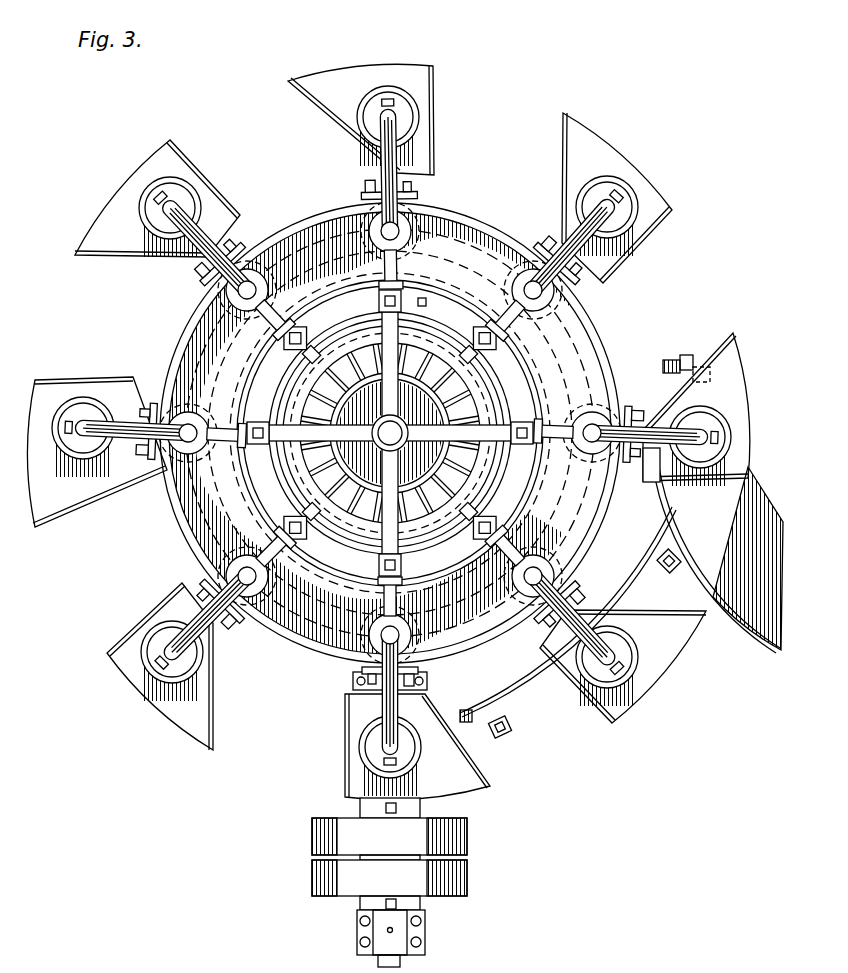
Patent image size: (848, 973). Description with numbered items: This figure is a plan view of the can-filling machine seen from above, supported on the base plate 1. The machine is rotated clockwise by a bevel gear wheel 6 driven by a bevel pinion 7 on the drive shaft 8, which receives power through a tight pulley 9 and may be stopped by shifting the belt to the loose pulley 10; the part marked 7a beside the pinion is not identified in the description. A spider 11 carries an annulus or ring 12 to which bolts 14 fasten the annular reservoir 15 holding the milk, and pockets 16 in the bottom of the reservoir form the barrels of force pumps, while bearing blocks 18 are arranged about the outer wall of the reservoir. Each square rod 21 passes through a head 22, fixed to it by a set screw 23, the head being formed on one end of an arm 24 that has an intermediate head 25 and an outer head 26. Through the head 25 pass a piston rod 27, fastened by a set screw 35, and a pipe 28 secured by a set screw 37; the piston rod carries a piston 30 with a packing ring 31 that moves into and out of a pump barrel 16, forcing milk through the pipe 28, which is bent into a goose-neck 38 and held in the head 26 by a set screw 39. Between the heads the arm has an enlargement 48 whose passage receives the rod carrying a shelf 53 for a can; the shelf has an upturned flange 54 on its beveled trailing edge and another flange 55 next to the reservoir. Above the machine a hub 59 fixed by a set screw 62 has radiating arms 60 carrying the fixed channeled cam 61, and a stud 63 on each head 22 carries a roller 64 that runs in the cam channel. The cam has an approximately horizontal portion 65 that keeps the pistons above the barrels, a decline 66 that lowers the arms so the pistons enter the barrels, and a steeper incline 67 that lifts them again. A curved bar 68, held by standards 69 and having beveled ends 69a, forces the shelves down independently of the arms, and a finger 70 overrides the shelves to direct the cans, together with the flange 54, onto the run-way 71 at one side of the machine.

The base plate 1 is at (398, 433).
The bevel gear wheel 6 is at (580, 498).
The bevel pinion 7 is at (330, 620).
The frame lug 7a is at (418, 317).
The shaft 8 is at (370, 965).
The pulley 9 is at (468, 838).
The loose pulley 10 is at (468, 877).
The spider 11 is at (390, 433).
The annulus or ring 12 is at (522, 350).
The bolts 14 is at (428, 302).
The annular reservoir 15 is at (473, 227).
The pockets 16 is at (510, 273).
The bearing blocks 18 is at (157, 405).
The rod 21 is at (523, 433).
The head 22 is at (557, 523).
The set screw 23 is at (377, 293).
The arm 24 is at (552, 306).
The head or enlargement 25 is at (560, 303).
The head 26 is at (617, 223).
The piston rod 27 is at (593, 423).
The pipe or conduit 28 is at (530, 613).
The piston 30 is at (243, 560).
The packing ring 31 is at (263, 593).
The set screw 35 is at (190, 453).
The set screw 37 is at (173, 450).
The goose-neck 38 is at (210, 638).
The set screw 39 is at (162, 670).
The enlargement 48 is at (540, 642).
The shelf 53 is at (195, 730).
The upturned flange 54 is at (215, 708).
The flange 55 is at (182, 595).
The hub 59 is at (390, 433).
The arms 60 is at (388, 433).
The channeled cam 61 is at (280, 463).
The set screw 62 is at (408, 426).
The stud 63 is at (370, 559).
The roller 64 is at (477, 529).
The horizontal portion 65 is at (504, 523).
The decline 66 is at (287, 413).
The incline 67 is at (530, 356).
The bar 68 is at (638, 589).
The standards 69 is at (685, 358).
The curved or beveled ends 69a is at (670, 360).
The finger 70 is at (657, 502).
The run-way 71 is at (757, 607).